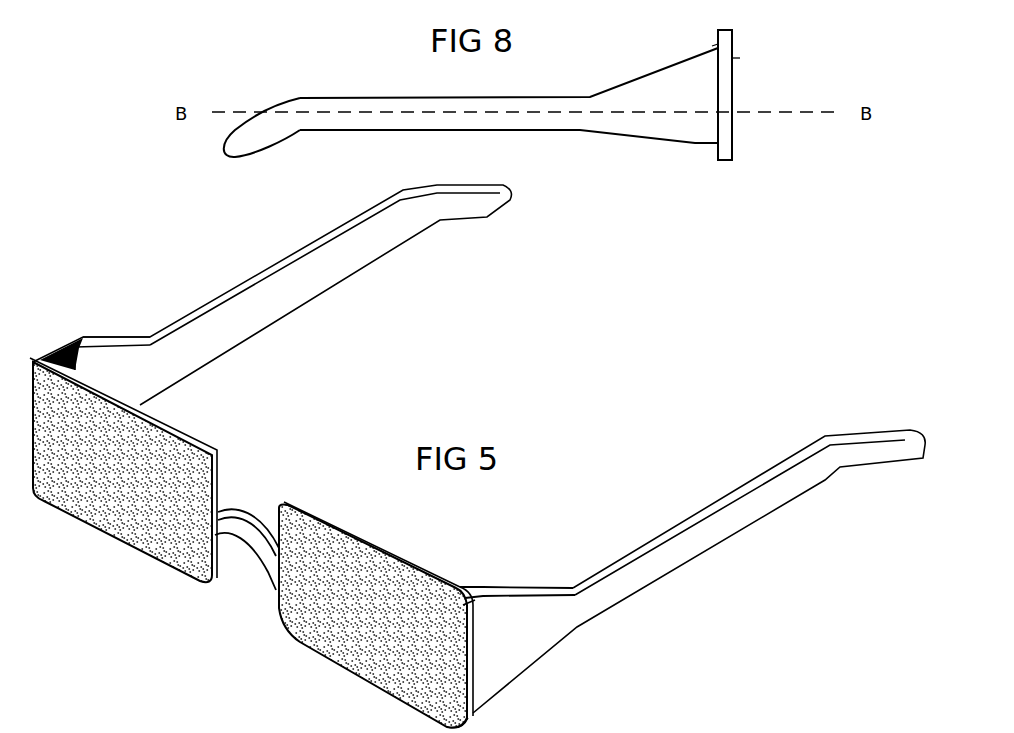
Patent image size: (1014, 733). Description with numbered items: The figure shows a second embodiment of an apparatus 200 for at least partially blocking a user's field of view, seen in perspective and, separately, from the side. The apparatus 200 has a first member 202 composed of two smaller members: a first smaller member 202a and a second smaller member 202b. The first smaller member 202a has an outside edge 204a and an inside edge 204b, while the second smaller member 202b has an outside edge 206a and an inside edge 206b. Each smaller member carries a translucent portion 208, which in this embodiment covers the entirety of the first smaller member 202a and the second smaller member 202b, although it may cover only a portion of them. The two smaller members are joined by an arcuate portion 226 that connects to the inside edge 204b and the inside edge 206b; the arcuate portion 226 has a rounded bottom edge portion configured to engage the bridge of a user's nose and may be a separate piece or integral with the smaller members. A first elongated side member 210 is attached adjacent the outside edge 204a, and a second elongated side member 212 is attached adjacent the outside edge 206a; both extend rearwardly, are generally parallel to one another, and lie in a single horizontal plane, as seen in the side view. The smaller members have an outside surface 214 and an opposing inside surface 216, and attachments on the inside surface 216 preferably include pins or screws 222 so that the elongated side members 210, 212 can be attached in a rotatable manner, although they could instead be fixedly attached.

In FIG. 8, the apparatus 200 is at (549, 104).
In FIG. 5, the apparatus 200 is at (470, 457).
In FIG. 8, the first member 202 is at (770, 58).
In FIG. 5, the first smaller member 202a is at (165, 432).
In FIG. 5, the second smaller member 202b is at (395, 556).
In FIG. 8, the outside edge 204a is at (735, 132).
In FIG. 5, the outside edge 204a is at (25, 400).
In FIG. 5, the inside edge 204b is at (215, 542).
In FIG. 5, the outside edge 206a is at (465, 718).
In FIG. 5, the inside edge 206b is at (286, 506).
In FIG. 5, the translucent portion 208 is at (115, 502).
In FIG. 8, the first elongated side member 210 is at (637, 135).
In FIG. 5, the first elongated side member 210 is at (188, 315).
In FIG. 5, the second elongated side member 212 is at (775, 460).
In FIG. 8, the outside surface 214 is at (733, 44).
In FIG. 8, the inside surface 216 is at (714, 45).
In FIG. 5, the pins or screws 222 is at (456, 588).
In FIG. 5, the arcuate portion 226 is at (250, 508).